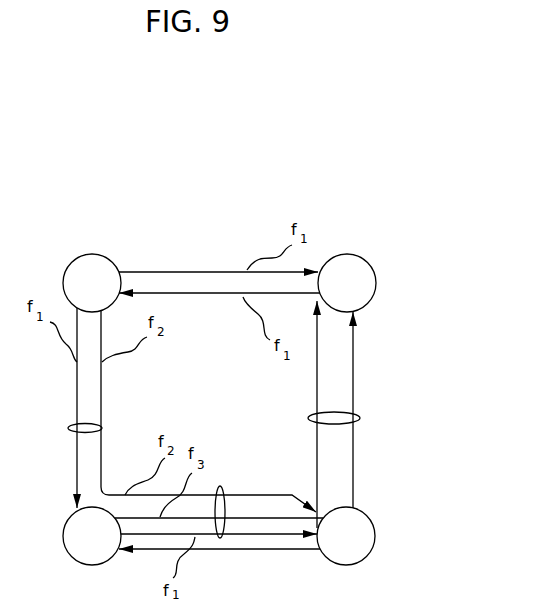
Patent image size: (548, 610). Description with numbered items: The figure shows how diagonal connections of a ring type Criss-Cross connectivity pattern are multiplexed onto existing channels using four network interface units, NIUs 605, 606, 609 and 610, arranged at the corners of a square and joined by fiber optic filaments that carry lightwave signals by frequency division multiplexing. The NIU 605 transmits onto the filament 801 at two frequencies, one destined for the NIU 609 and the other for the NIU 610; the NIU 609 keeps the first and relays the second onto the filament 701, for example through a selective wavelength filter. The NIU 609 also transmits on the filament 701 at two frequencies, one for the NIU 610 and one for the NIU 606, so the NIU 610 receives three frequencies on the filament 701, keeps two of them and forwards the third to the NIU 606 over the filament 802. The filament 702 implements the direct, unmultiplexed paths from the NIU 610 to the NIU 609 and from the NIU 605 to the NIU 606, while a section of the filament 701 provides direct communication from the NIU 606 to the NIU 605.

The NIU 605 is at (92, 283).
The NIU 606 is at (347, 283).
The NIU 609 is at (92, 536).
The NIU 610 is at (346, 536).
The filament 701 is at (180, 295).
The filament 702 is at (148, 271).
The filament 801 is at (105, 427).
The filament 802 is at (362, 418).